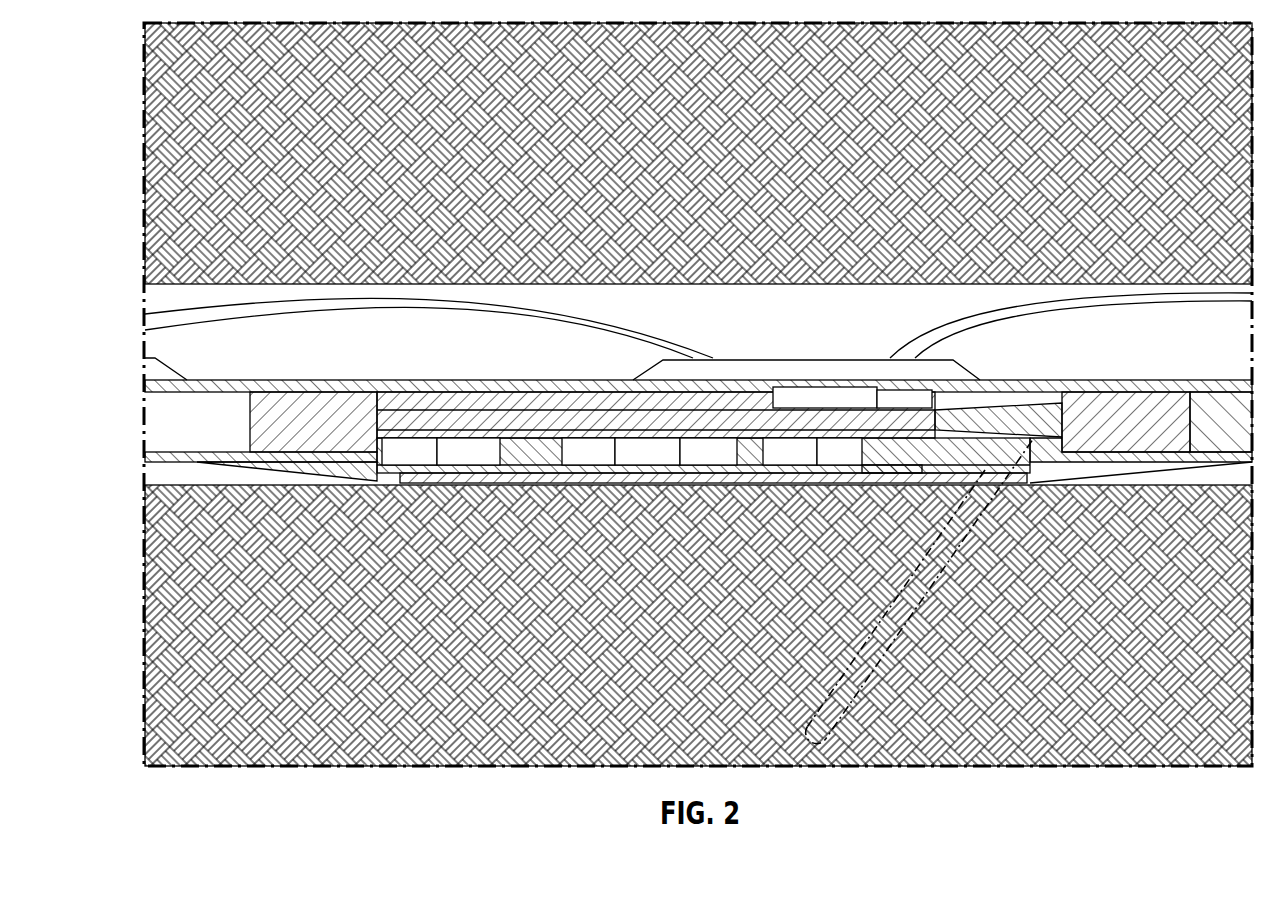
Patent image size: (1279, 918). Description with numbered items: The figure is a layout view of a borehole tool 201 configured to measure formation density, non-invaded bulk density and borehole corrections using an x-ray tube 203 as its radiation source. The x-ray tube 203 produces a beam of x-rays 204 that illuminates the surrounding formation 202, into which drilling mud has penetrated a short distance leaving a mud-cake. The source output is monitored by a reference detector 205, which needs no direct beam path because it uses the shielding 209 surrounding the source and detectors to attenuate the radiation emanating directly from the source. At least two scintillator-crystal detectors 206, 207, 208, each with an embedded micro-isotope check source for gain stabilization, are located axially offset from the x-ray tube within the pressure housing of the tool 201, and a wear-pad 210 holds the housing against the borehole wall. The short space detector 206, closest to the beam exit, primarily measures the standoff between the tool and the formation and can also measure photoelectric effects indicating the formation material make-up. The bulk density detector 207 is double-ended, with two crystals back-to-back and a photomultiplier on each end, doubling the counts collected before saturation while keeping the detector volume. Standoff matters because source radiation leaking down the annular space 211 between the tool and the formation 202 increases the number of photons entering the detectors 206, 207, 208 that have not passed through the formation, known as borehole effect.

The borehole tool 201 is at (320, 435).
The formation 202 is at (192, 605).
The x-ray tube 203 is at (250, 435).
The beam of x-rays 204 is at (838, 708).
The reference detector 205 is at (838, 397).
The short space detector 206 is at (792, 455).
The bulk density detector 207 is at (598, 455).
The detector 208 is at (398, 460).
The shielding 209 is at (855, 455).
The wear-pad 210 is at (815, 468).
The annular space 211 is at (650, 478).